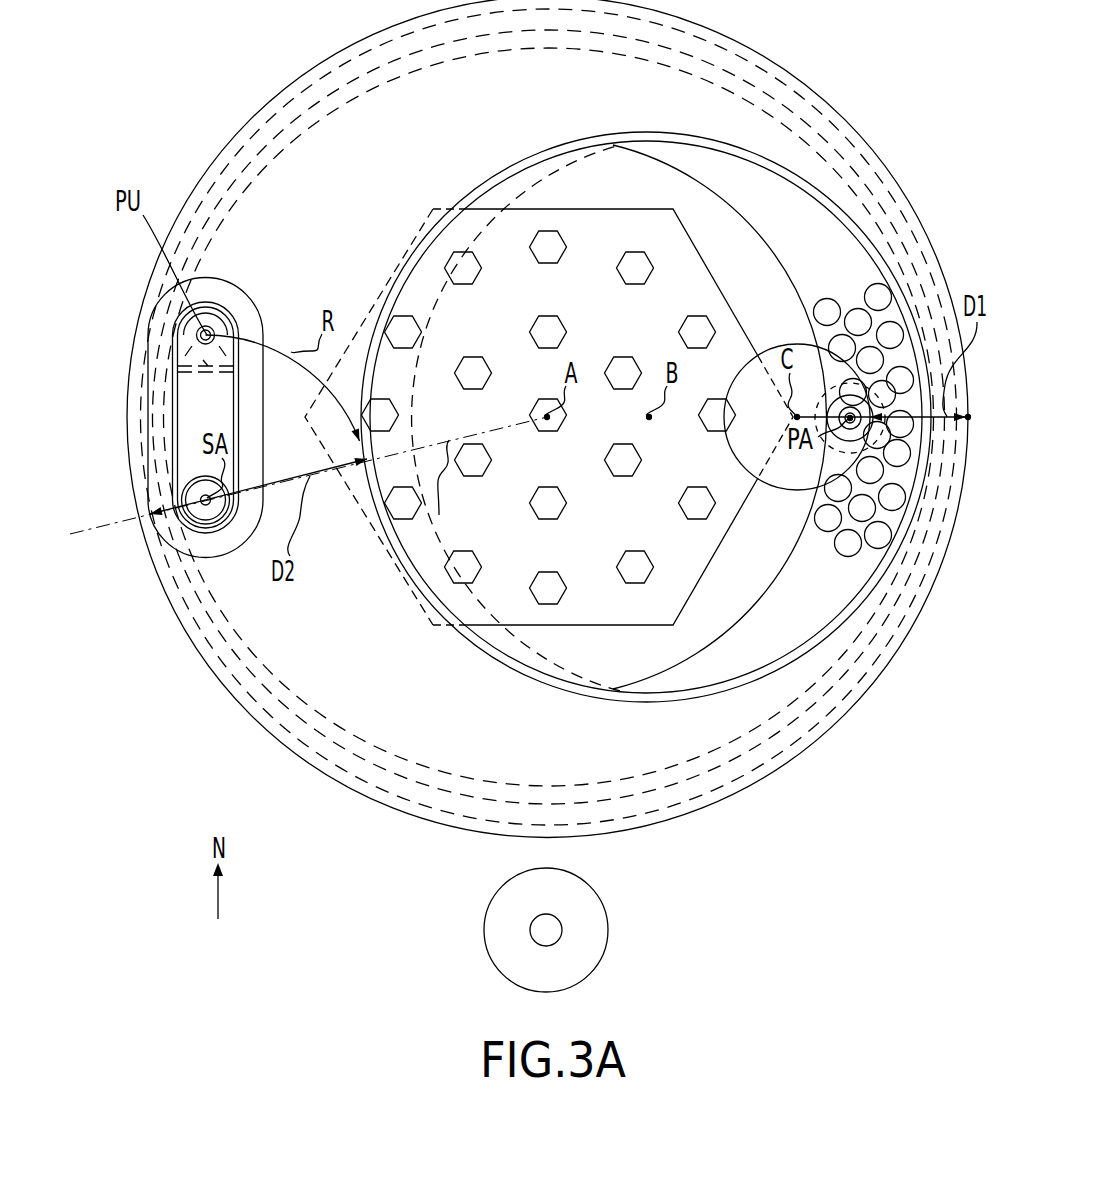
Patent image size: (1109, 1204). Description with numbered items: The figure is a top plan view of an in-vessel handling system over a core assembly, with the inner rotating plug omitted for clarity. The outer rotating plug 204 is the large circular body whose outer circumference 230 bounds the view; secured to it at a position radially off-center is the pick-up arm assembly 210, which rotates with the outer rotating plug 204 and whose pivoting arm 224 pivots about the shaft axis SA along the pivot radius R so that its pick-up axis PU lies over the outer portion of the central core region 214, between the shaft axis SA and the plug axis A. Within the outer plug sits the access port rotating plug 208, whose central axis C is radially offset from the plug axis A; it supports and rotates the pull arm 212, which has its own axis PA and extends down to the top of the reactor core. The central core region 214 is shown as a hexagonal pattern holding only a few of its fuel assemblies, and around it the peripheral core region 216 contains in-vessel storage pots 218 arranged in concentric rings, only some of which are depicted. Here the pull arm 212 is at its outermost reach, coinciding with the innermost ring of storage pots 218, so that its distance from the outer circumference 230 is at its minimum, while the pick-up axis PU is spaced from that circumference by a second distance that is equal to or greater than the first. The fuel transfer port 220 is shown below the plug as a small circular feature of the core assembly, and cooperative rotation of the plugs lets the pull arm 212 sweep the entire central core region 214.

The outer rotating plug 204 is at (748, 772).
The access port rotating plug 208 is at (773, 349).
The pick-up arm assembly 210 is at (245, 283).
The pull arm 212 is at (850, 415).
The central core region 214 is at (594, 246).
The peripheral core region 216 is at (783, 210).
The in-vessel storage pots 218 is at (848, 545).
The fuel transfer port 220 is at (610, 919).
The pivoting arm 224 is at (238, 403).
The outer circumference 230 is at (876, 684).